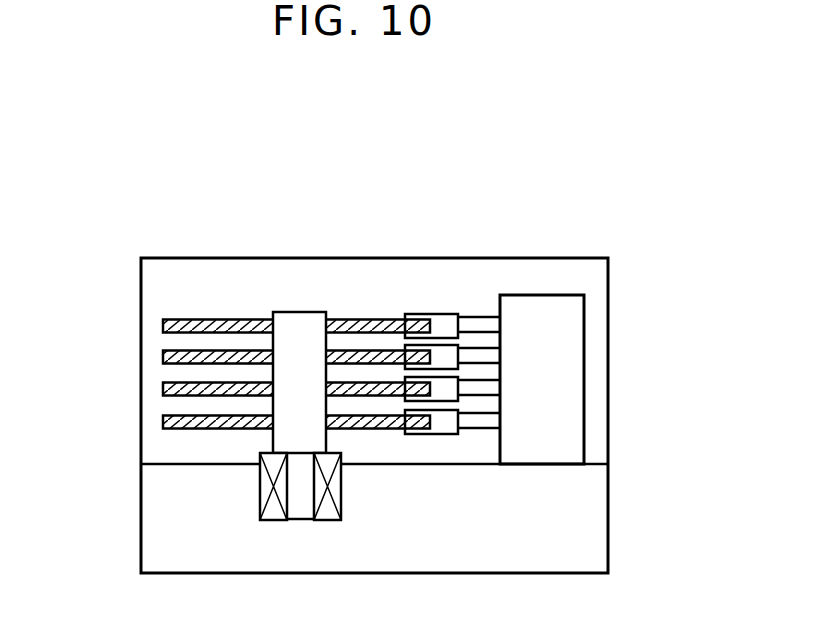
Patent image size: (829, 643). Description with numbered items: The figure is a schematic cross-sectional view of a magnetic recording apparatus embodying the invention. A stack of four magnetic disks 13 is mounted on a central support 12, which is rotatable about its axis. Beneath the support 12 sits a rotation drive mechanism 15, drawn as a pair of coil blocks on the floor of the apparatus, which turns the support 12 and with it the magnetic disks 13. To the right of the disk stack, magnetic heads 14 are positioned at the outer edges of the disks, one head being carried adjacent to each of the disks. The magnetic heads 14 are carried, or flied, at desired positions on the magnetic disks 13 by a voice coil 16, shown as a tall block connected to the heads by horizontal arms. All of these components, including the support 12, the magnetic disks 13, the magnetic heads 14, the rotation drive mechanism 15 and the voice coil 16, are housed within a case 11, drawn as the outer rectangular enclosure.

The case 11 is at (373, 258).
The support 12 is at (295, 322).
The magnetic disks 13 is at (177, 320).
The magnetic heads 14 is at (413, 312).
The rotation drive mechanism 15 is at (274, 518).
The voice coil 16 is at (564, 295).